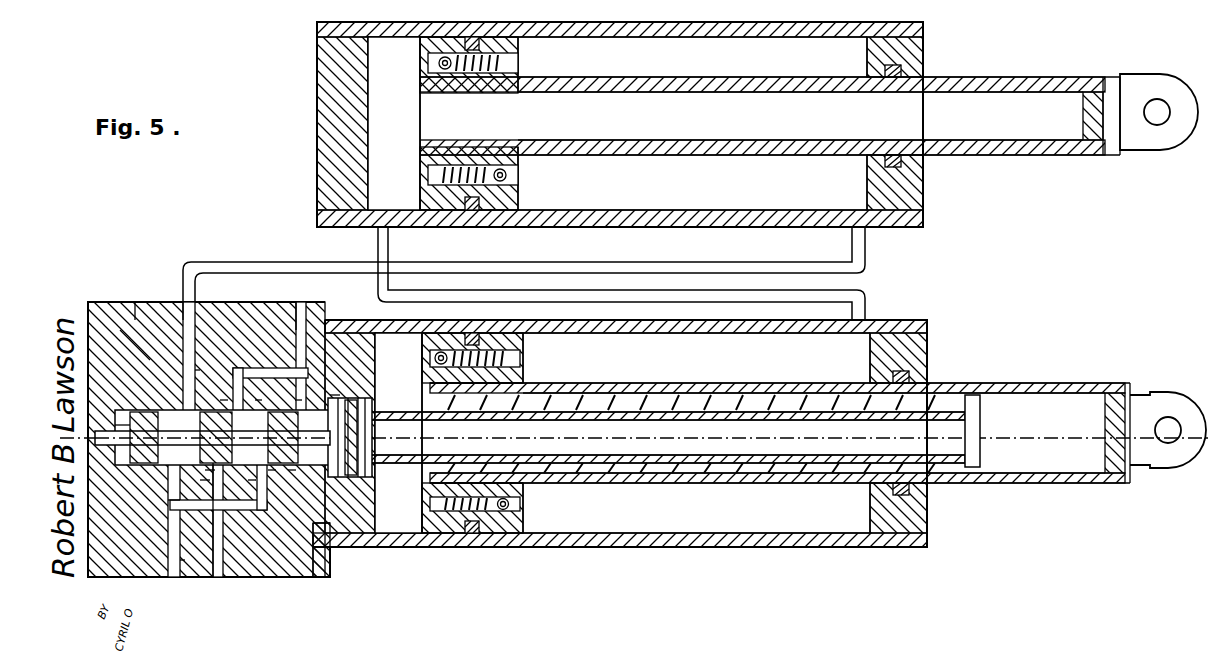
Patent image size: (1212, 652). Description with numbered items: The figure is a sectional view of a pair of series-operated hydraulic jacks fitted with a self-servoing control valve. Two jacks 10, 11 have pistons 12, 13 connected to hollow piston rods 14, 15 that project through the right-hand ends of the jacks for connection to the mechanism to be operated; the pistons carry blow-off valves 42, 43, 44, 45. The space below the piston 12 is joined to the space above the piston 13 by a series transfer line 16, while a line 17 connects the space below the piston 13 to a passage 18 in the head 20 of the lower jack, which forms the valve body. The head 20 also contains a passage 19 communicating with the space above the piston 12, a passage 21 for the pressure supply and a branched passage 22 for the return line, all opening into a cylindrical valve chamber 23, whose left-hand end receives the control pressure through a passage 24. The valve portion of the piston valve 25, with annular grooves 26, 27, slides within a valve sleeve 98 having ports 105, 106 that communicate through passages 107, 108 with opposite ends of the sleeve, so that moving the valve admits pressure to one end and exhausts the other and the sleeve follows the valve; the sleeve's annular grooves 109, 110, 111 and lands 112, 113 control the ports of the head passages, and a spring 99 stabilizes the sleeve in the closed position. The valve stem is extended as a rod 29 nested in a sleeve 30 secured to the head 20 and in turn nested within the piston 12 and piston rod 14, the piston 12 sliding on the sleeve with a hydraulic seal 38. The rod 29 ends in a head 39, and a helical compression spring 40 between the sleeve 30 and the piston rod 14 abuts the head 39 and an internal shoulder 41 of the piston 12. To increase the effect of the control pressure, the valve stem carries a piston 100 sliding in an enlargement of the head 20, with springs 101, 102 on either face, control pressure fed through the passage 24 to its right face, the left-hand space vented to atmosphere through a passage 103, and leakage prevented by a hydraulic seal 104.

The jack 10 is at (710, 548).
The jack 11 is at (912, 218).
The piston 12 is at (430, 382).
The piston 13 is at (430, 86).
The hollow piston rod 14 is at (1005, 483).
The hollow piston rod 15 is at (1000, 150).
The series transfer line 16 is at (862, 312).
The line 17 is at (866, 248).
The passage 18 is at (185, 318).
The passage 19 is at (353, 395).
The head 20 is at (230, 439).
The passage 21 is at (226, 597).
The branched passage 22 is at (183, 560).
The valve chamber 23 is at (292, 470).
The passage 24 is at (312, 560).
The piston valve 25 is at (170, 500).
The annular groove 26 is at (210, 470).
The annular groove 27 is at (272, 470).
The rod 29 is at (775, 440).
The sleeve 30 is at (598, 486).
The hydraulic seal 38 is at (432, 410).
The head 39 is at (985, 400).
The helical compression spring 40 is at (650, 488).
The internal shoulder 41 is at (430, 472).
The blow-off valve 42 is at (538, 512).
The blow-off valve 43 is at (436, 357).
The blow-off valve 44 is at (508, 176).
The blow-off valve 45 is at (440, 63).
The valve sleeve 98 is at (252, 480).
The spring 99 is at (111, 411).
The piston 100 is at (365, 548).
The spring 101 is at (300, 400).
The spring 102 is at (370, 400).
The passage 103 is at (303, 330).
The hydraulic seal 104 is at (335, 395).
The port 105 is at (97, 305).
The port 106 is at (200, 380).
The passage 107 is at (121, 346).
The passage 108 is at (260, 395).
The annular groove 109 is at (205, 480).
The annular groove 110 is at (222, 470).
The annular groove 111 is at (333, 570).
The land 112 is at (140, 302).
The land 113 is at (225, 395).